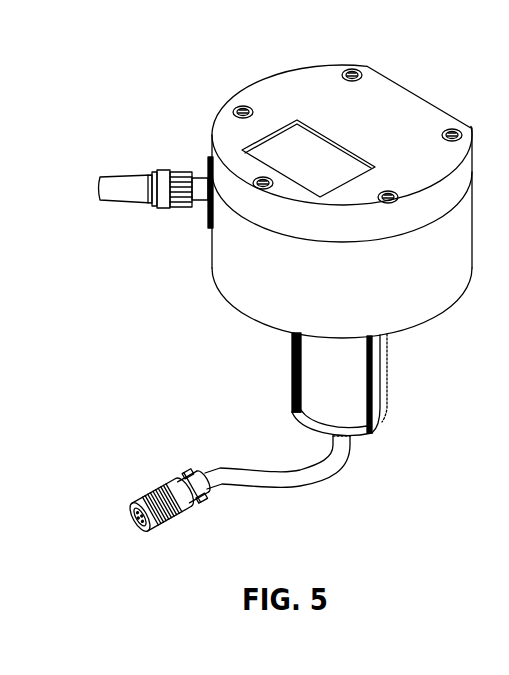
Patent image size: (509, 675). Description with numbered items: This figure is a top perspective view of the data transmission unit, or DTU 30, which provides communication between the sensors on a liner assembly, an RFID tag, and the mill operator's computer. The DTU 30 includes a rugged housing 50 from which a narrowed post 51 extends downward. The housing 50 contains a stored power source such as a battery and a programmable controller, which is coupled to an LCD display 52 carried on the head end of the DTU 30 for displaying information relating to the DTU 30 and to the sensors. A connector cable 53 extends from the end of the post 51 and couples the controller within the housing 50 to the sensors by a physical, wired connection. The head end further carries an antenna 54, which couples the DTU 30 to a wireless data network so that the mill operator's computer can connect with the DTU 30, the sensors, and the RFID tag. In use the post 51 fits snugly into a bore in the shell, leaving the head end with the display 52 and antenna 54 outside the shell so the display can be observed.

The data transmission unit (DTU) 30 is at (427, 78).
The housing 50 is at (235, 270).
The post 51 is at (327, 372).
The LCD display 52 is at (295, 135).
The connector cable 53 is at (283, 482).
The antenna 54 is at (155, 207).